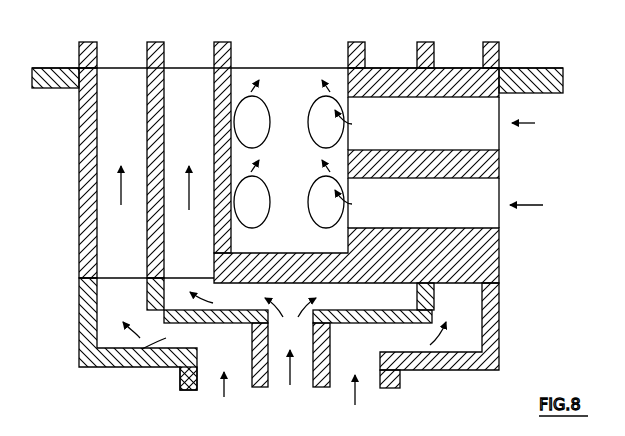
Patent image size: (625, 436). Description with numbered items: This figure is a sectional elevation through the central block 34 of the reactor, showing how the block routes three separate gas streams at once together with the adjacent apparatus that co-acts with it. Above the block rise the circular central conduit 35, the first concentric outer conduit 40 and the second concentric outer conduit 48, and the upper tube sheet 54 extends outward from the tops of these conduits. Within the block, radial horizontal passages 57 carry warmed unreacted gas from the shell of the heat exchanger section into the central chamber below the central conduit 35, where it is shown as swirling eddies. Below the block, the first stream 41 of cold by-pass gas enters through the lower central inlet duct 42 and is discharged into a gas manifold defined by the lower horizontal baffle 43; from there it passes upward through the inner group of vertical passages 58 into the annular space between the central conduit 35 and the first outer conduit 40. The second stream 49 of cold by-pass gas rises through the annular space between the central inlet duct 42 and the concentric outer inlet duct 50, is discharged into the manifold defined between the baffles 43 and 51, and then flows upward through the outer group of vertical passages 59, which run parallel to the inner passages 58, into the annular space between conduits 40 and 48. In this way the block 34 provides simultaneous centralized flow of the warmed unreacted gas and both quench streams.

The central block 34 is at (79, 172).
The central conduit 35 is at (231, 46).
The first concentric outer conduit 40 is at (164, 46).
The first stream of cold by-pass gas 41 is at (290, 375).
The lower central inlet duct 42 is at (318, 389).
The lower horizontal baffle 43 is at (205, 324).
The second concentric outer conduit 48 is at (97, 46).
The second stream of cold by-pass gas 49 is at (228, 392).
The concentric outer inlet duct 50 is at (180, 385).
The baffle 51 is at (142, 348).
The upper tube sheet 54 is at (56, 88).
The radial horizontal passages 57 is at (500, 139).
The inner vertical passages 58 is at (200, 292).
The outer vertical passages 59 is at (105, 279).